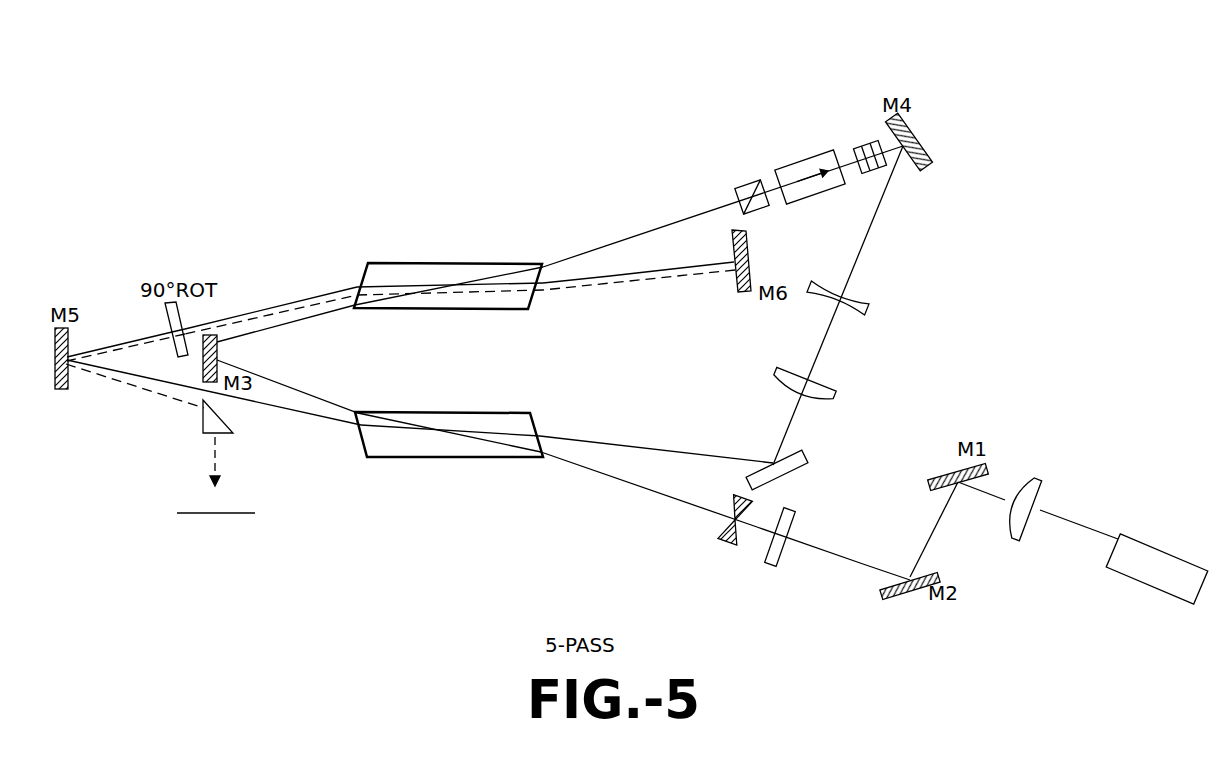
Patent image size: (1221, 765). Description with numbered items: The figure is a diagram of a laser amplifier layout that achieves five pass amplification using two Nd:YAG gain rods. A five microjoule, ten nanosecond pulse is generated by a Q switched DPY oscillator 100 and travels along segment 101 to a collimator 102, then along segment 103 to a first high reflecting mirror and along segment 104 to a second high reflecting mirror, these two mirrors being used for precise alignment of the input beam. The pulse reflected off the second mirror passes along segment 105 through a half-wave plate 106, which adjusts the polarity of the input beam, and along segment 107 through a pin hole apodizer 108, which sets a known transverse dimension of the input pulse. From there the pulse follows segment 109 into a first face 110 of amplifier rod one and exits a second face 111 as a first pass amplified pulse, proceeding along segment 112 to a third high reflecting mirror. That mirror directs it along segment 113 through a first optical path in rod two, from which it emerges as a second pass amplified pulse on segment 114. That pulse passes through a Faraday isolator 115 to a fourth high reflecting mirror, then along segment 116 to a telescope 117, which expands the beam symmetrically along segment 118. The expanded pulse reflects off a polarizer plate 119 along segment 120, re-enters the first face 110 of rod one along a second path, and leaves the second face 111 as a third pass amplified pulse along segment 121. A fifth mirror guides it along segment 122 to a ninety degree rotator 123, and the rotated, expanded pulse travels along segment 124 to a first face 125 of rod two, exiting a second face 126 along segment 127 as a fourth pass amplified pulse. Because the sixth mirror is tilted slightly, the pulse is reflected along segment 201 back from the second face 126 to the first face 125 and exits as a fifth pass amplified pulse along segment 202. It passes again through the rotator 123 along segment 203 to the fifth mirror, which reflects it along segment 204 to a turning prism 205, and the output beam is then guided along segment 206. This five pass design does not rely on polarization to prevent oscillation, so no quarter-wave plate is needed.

The Q switched DPY oscillator 100 is at (1163, 553).
The segment 101 is at (1080, 528).
The collimator 102 is at (1040, 500).
The segment 103 is at (987, 495).
The segment 104 is at (930, 542).
The segment 105 is at (863, 570).
The half-wave plate 106 is at (780, 562).
The segment 107 is at (757, 527).
The pin hole apodizer 108 is at (733, 502).
The segment 109 is at (607, 476).
The first face of amplifier rod 1 110 is at (535, 417).
The second face of amplifier rod 1 111 is at (362, 445).
The segment 112 is at (277, 383).
The segment 113 is at (287, 326).
The segment 114 is at (622, 240).
The Faraday isolator 115 is at (805, 102).
The segment 116 is at (872, 235).
The telescope 117 is at (902, 364).
The segment 118 is at (792, 417).
The polarizer plate 119 is at (803, 452).
The segment 120 is at (618, 443).
The segment 121 is at (330, 428).
The segment 122 is at (160, 333).
The 90 degree rotator 123 is at (185, 315).
The segment 124 is at (333, 290).
The first face of amplifier rod 2 125 is at (362, 280).
The second face of amplifier rod 2 126 is at (530, 303).
The segment 127 is at (618, 280).
The segment 201 is at (583, 288).
The segment 202 is at (297, 307).
The segment 203 is at (97, 357).
The segment 204 is at (137, 387).
The turning prism 205 is at (218, 430).
The segment 206 is at (212, 460).